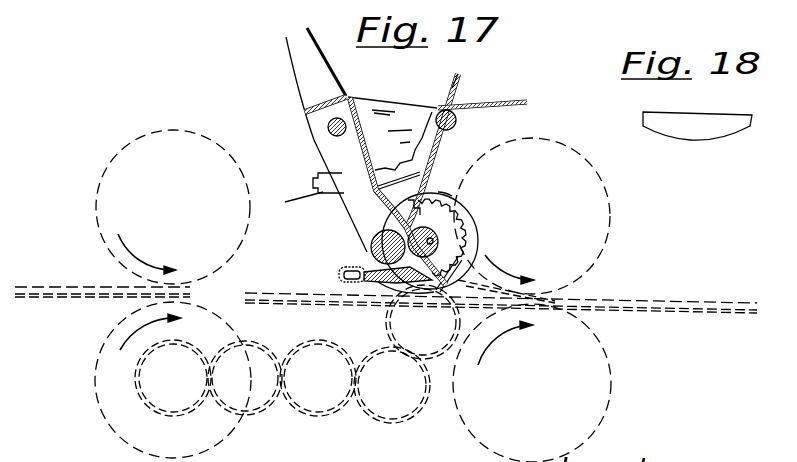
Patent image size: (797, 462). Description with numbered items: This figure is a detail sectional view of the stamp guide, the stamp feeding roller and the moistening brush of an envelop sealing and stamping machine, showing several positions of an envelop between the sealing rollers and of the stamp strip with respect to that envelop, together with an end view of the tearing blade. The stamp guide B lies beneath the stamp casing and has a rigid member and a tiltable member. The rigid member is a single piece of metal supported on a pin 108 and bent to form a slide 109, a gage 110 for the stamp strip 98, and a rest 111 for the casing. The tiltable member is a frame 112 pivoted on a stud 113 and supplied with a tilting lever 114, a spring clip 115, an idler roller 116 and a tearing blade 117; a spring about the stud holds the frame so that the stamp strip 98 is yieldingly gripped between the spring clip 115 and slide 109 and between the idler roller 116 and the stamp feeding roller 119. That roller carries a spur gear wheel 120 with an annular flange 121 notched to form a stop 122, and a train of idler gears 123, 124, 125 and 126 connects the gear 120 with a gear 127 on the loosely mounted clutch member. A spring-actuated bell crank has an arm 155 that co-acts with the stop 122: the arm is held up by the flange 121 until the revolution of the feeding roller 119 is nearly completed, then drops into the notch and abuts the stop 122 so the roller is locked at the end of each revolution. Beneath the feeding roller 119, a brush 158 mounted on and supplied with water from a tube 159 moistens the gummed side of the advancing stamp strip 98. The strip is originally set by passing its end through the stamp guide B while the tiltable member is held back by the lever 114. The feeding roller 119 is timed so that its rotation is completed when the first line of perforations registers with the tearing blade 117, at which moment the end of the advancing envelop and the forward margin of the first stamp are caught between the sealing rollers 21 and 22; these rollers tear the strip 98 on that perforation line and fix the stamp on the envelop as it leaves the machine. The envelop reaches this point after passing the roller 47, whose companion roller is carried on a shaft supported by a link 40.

In FIG. 17, the link 40 is at (98, 194).
In FIG. 17, the roller 47 is at (108, 353).
In FIG. 17, the roller 21 is at (605, 239).
In FIG. 17, the roller 22 is at (605, 360).
In FIG. 17, the gear 127 is at (173, 398).
In FIG. 17, the idler gear 126 is at (302, 333).
In FIG. 17, the idler gear 125 is at (370, 338).
In FIG. 17, the idler gear 124 is at (382, 407).
In FIG. 17, the idler gear 123 is at (445, 350).
In FIG. 17, the brush 158 is at (436, 333).
In FIG. 17, the tilting lever 114 is at (309, 66).
In FIG. 17, the stud 113 is at (328, 127).
In FIG. 17, the frame 112 is at (337, 140).
In FIG. 17, the arm 155 is at (300, 226).
In FIG. 17, the stamp guide B is at (384, 96).
In FIG. 17, the gage 110 is at (402, 148).
In FIG. 17, the slide 109 is at (486, 159).
In FIG. 17, the stamp strip 98 is at (451, 84).
In FIG. 17, the rest 111 is at (539, 91).
In FIG. 17, the pin 108 is at (510, 133).
In FIG. 17, the stop 122 is at (477, 180).
In FIG. 17, the tearing blade 117 is at (539, 256).
In FIG. 18, the tearing blade 117 is at (741, 108).
In FIG. 17, the spur gear wheel 120 is at (443, 222).
In FIG. 17, the annular flange 121 is at (523, 191).
In FIG. 17, the stamp feeding roller 119 is at (438, 242).
In FIG. 17, the spring clip 115 is at (400, 196).
In FIG. 17, the idler roller 116 is at (371, 246).
In FIG. 17, the tube 159 is at (339, 273).